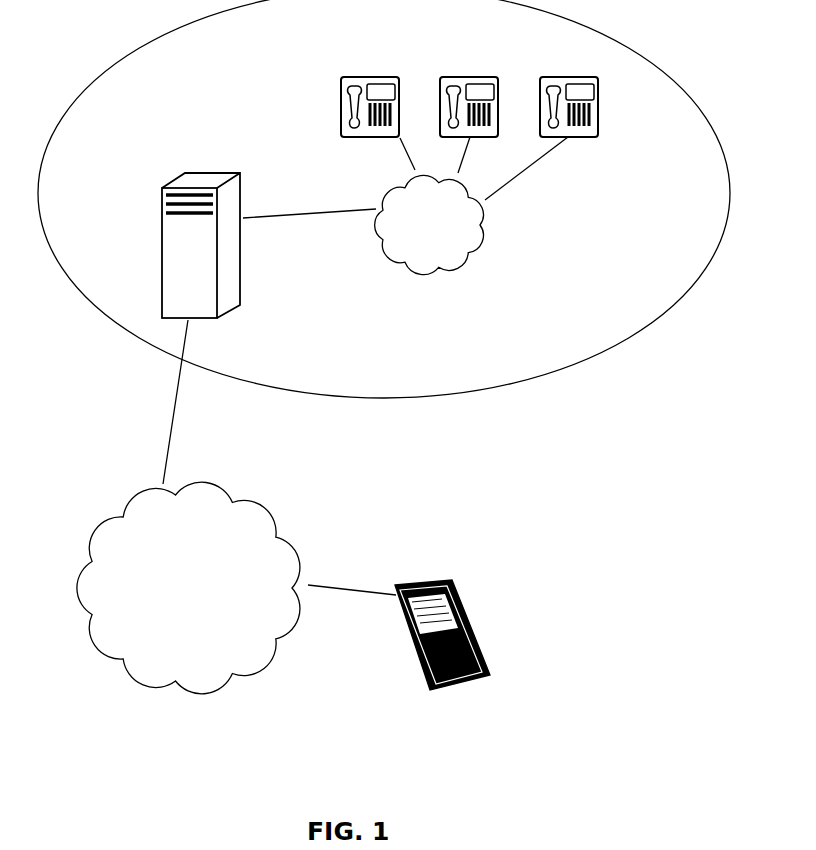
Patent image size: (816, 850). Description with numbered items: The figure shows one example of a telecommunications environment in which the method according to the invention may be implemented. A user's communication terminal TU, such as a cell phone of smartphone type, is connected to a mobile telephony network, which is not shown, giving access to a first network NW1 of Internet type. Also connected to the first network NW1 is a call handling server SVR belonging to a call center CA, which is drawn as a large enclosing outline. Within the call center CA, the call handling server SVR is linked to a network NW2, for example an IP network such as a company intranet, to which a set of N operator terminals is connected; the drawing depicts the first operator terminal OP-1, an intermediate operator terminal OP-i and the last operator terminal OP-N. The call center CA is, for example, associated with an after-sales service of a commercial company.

The call center CA is at (640, 52).
The operator terminal OP-1 is at (370, 77).
The operator terminal OP-i is at (468, 77).
The operator terminal OP-N is at (569, 77).
The network NW2 is at (429, 224).
The call handling server SVR is at (201, 245).
The first network NW1 is at (188, 588).
The communication terminal TU is at (465, 606).